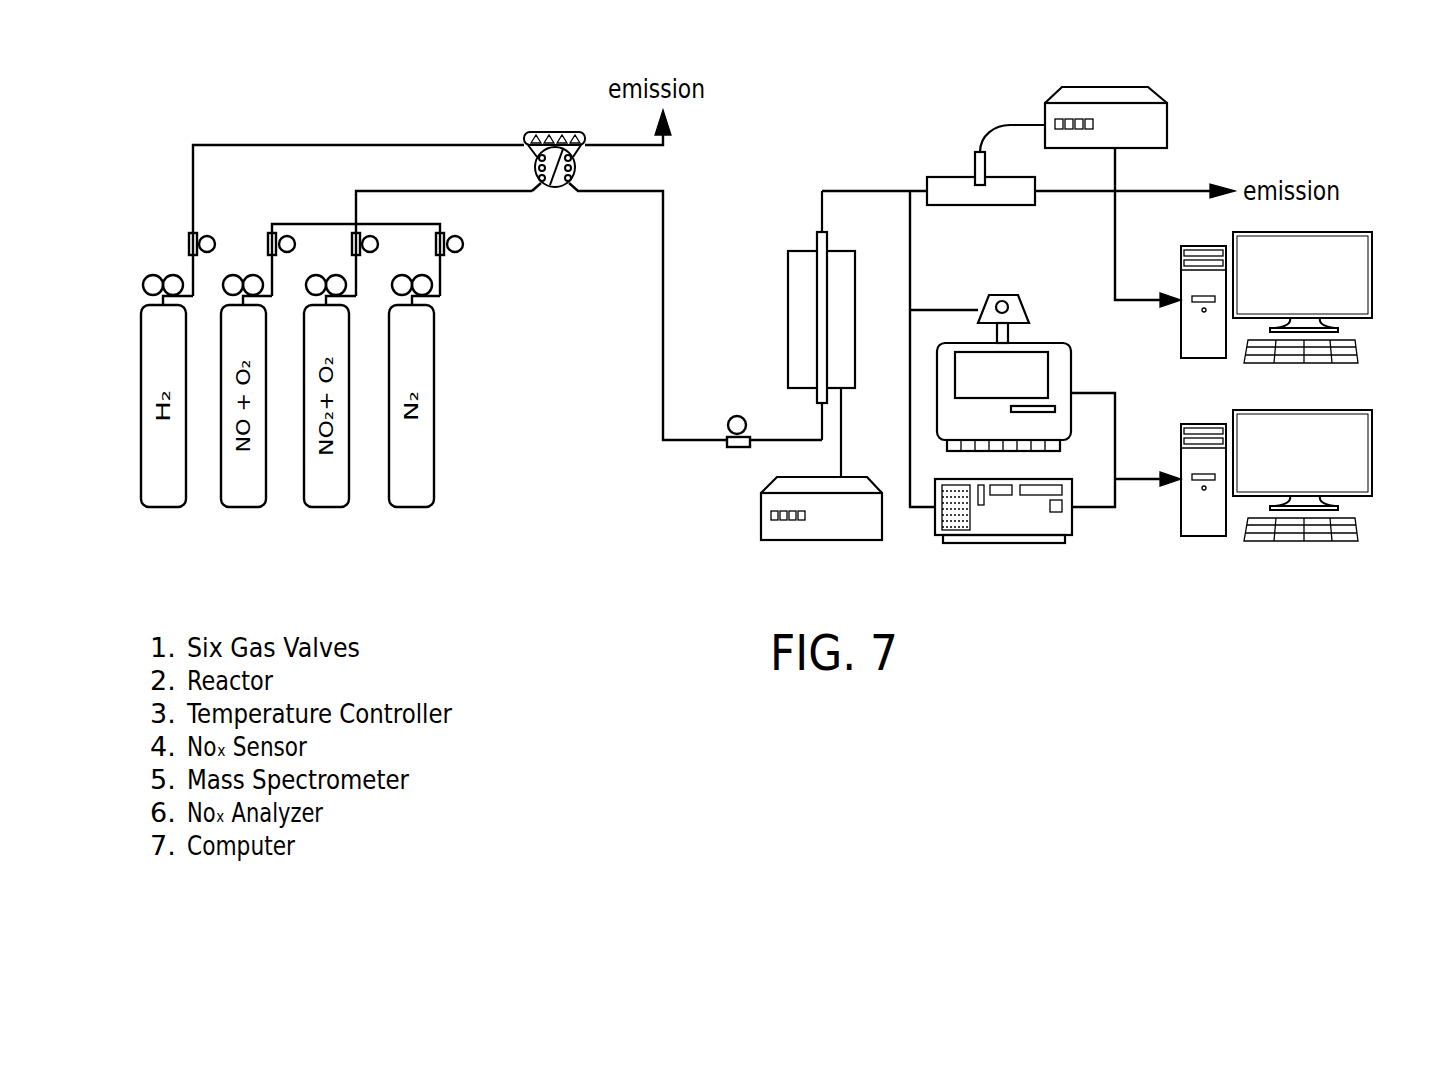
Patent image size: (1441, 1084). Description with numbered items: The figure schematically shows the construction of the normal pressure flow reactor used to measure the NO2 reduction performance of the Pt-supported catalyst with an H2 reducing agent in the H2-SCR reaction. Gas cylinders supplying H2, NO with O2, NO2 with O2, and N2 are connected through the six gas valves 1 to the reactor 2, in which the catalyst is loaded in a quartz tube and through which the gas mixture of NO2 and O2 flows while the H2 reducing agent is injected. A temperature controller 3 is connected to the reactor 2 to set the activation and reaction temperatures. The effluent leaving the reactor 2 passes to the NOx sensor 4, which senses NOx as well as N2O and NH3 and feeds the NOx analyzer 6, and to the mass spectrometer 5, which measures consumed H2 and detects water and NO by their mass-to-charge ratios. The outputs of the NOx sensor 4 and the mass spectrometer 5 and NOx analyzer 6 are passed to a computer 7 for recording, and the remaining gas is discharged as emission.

The six gas valves 1 is at (555, 187).
The reactor 2 is at (788, 314).
The temperature controller 3 is at (761, 521).
The NOx sensor 4 is at (1167, 128).
The mass spectrometer 5 is at (1071, 368).
The NOx analyzer 6 is at (1072, 520).
The computer 7 is at (1372, 457).